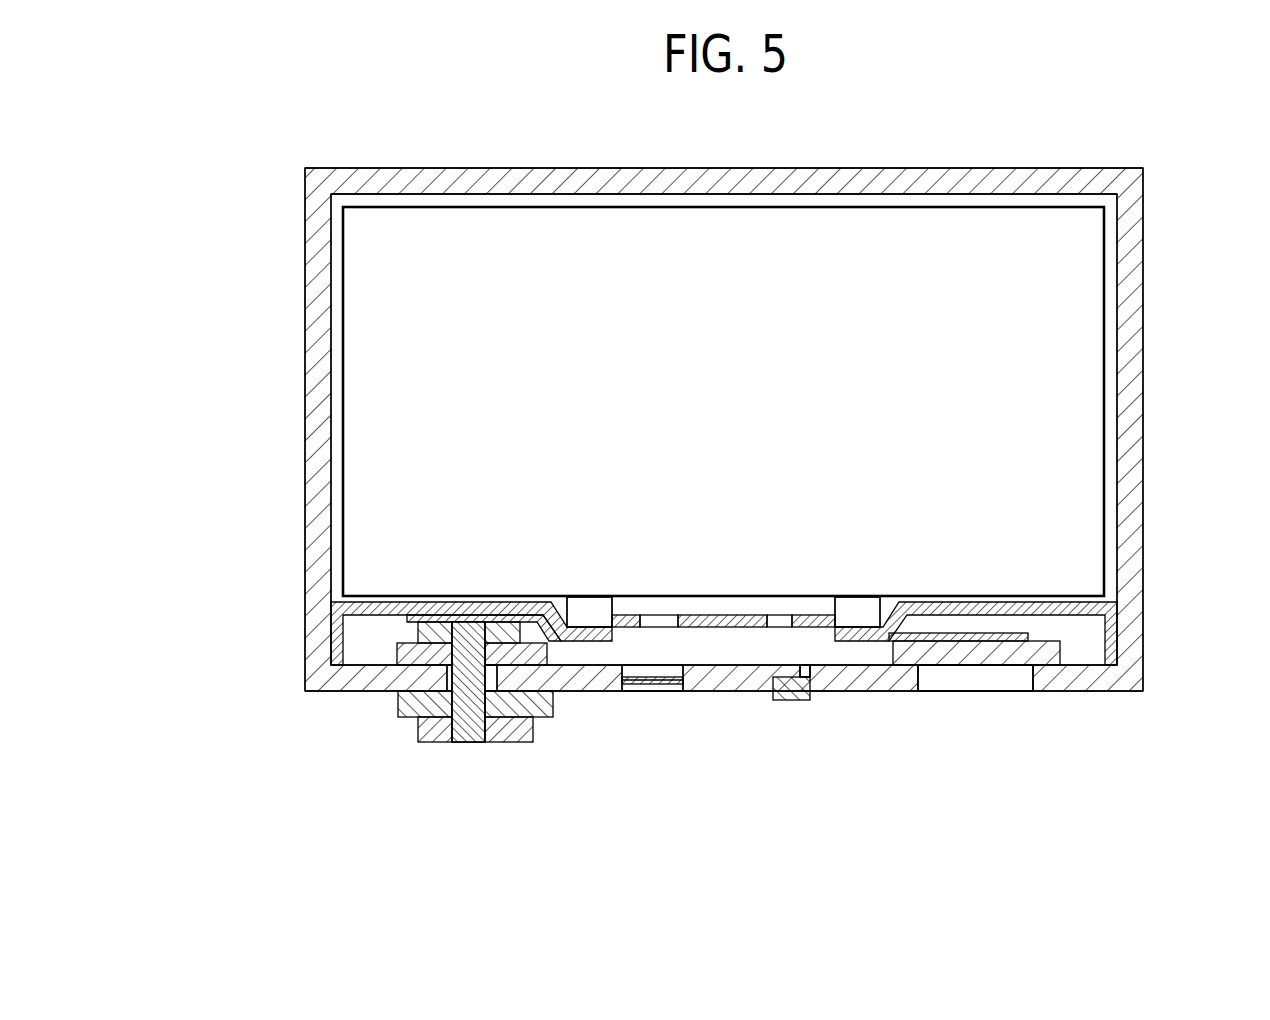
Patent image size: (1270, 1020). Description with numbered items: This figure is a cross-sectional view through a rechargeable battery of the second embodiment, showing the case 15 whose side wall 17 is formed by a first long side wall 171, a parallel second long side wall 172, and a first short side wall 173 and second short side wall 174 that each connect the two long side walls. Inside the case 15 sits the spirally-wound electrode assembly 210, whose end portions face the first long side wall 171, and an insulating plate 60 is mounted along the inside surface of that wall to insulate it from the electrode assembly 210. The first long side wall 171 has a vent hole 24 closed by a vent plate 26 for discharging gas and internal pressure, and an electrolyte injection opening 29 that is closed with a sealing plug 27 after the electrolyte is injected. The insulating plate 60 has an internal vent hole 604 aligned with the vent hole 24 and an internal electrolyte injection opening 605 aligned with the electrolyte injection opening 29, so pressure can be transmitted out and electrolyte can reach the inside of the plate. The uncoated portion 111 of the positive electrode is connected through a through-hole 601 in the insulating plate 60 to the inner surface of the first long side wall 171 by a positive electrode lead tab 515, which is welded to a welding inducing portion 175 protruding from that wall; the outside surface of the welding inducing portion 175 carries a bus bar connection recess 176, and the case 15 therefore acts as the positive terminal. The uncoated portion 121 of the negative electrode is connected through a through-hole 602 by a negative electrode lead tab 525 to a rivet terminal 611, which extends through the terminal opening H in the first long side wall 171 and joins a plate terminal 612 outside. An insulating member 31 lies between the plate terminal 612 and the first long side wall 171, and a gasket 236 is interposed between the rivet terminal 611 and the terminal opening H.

The case 15 is at (1152, 384).
The side wall 17 is at (211, 257).
The first long side wall 171 is at (735, 678).
The second long side wall 172 is at (886, 180).
The first short side wall 173 is at (1130, 312).
The second short side wall 174 is at (318, 370).
The electrode assembly 210 is at (340, 500).
The insulating plate 60 is at (1130, 626).
The negative electrode lead tab 525 is at (575, 636).
The positive electrode lead tab 515 is at (960, 641).
The welding inducing portion 175 is at (1000, 657).
The bus bar connection recess 176 is at (935, 685).
The through-hole 602 is at (573, 610).
The uncoated portion 121 is at (597, 605).
The through-hole 601 is at (845, 616).
The uncoated portion 111 is at (863, 605).
The internal vent hole 604 is at (660, 620).
The internal electrolyte injection opening 605 is at (778, 620).
The vent hole 24 is at (637, 686).
The vent plate 26 is at (658, 684).
The sealing plug 27 is at (797, 702).
The electrolyte injection opening 29 is at (814, 678).
The gasket 236 is at (405, 652).
The insulating member 31 is at (413, 718).
The rivet terminal 611 is at (463, 723).
The plate terminal 612 is at (505, 733).
The terminal opening H is at (476, 717).